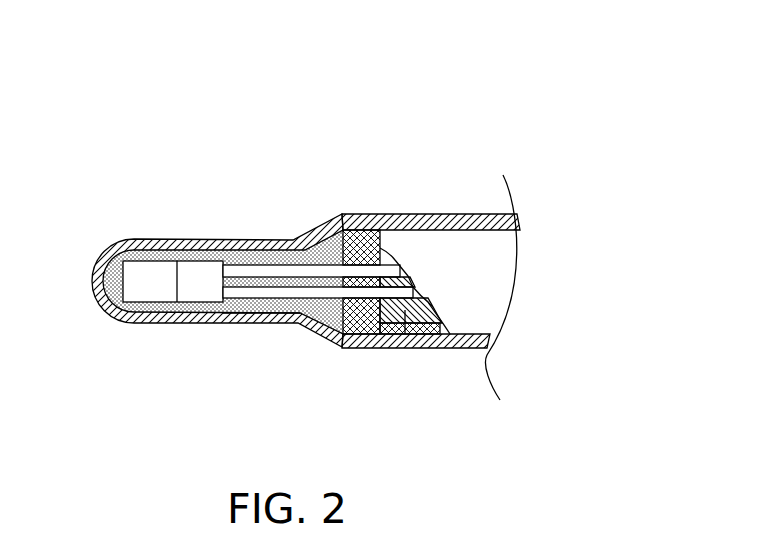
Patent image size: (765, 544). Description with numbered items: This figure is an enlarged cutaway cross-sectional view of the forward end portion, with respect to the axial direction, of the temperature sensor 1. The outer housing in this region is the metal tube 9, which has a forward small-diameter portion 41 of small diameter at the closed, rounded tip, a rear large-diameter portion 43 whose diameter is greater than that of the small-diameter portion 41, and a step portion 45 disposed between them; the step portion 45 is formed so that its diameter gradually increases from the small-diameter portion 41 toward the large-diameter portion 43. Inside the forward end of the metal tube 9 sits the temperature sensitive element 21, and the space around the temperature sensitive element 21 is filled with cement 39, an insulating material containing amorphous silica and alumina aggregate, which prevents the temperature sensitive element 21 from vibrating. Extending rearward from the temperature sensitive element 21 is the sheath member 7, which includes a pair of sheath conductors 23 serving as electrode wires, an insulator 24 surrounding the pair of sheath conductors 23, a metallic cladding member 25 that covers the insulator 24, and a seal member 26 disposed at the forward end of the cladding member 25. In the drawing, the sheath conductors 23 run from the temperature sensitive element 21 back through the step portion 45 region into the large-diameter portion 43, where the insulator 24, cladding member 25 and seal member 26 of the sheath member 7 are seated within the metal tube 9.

The temperature sensor 1 is at (312, 70).
The sheath member 7 is at (455, 415).
The metal tube 9 is at (407, 170).
The temperature sensitive element 21 is at (153, 292).
The sheath conductors 23 is at (252, 273).
The insulator 24 is at (387, 350).
The cladding member 25 is at (423, 350).
The seal member 26 is at (343, 350).
The cement 39 is at (233, 308).
The small-diameter portion 41 is at (213, 238).
The large-diameter portion 43 is at (373, 213).
The step portion 45 is at (310, 225).